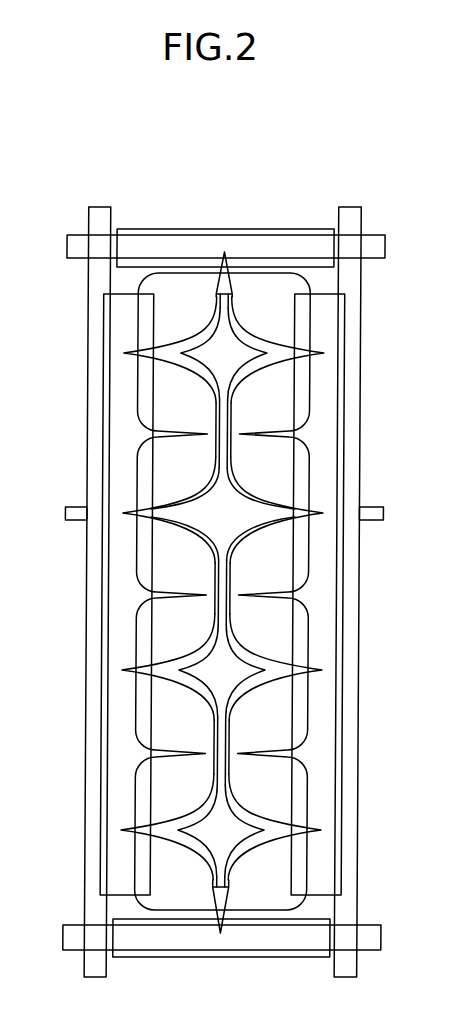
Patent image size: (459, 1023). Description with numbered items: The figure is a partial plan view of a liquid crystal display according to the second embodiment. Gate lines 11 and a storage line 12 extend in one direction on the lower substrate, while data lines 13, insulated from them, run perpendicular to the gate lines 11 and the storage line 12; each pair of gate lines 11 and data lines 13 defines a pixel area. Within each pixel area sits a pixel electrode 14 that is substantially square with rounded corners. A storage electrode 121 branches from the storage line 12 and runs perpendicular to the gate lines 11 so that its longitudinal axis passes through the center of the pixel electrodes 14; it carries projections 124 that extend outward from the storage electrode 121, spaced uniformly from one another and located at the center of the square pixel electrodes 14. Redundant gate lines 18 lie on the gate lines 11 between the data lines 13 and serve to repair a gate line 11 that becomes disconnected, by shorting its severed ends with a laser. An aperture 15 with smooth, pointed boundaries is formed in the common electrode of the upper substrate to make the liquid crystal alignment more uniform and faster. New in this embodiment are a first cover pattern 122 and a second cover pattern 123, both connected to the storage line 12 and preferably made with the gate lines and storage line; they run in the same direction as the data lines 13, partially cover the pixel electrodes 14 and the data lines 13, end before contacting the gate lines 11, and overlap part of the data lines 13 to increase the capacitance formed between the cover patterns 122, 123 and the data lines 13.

The gate line 11 is at (288, 237).
The storage line 12 is at (382, 513).
The data line 13 is at (88, 368).
The pixel electrode 14 is at (310, 397).
The aperture 15 is at (230, 764).
The redundant gate line 18 is at (182, 227).
The storage electrode 121 is at (230, 720).
The first cover pattern 122 is at (115, 750).
The second cover pattern 123 is at (332, 618).
The projection 124 is at (233, 345).